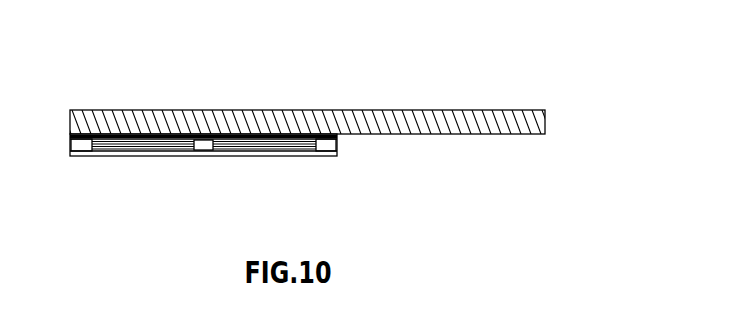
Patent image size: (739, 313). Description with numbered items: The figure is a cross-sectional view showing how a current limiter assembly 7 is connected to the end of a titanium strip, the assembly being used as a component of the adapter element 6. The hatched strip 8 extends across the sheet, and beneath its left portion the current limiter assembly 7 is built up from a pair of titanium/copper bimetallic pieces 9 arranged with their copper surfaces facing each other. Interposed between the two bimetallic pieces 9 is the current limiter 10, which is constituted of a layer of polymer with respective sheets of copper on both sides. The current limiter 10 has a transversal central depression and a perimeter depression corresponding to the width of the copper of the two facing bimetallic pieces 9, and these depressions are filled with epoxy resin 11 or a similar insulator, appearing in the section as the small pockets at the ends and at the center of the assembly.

The adapter element 6 is at (373, 87).
The current limiter assembly 7 is at (133, 158).
The carrier plate 8 is at (386, 135).
The titanium/copper bimetallic pieces 9 is at (318, 110).
The current limiter 10 is at (288, 156).
The epoxy resin 11 is at (210, 140).